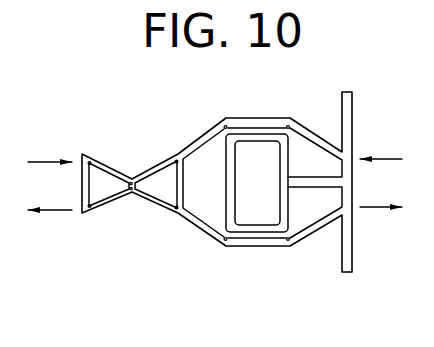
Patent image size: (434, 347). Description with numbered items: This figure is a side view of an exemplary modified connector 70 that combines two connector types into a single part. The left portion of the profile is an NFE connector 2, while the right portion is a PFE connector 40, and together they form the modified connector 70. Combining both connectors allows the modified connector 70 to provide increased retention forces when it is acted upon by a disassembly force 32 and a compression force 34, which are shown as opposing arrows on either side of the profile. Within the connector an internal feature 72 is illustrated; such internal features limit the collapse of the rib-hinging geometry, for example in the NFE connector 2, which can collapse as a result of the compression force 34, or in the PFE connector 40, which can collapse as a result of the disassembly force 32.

The NFE connector 2 is at (177, 287).
The PFE connector 40 is at (343, 287).
The modified connector 70 is at (258, 105).
The internal feature 72 is at (220, 182).
The compression force 34 is at (214, 147).
The disassembly force 32 is at (215, 223).